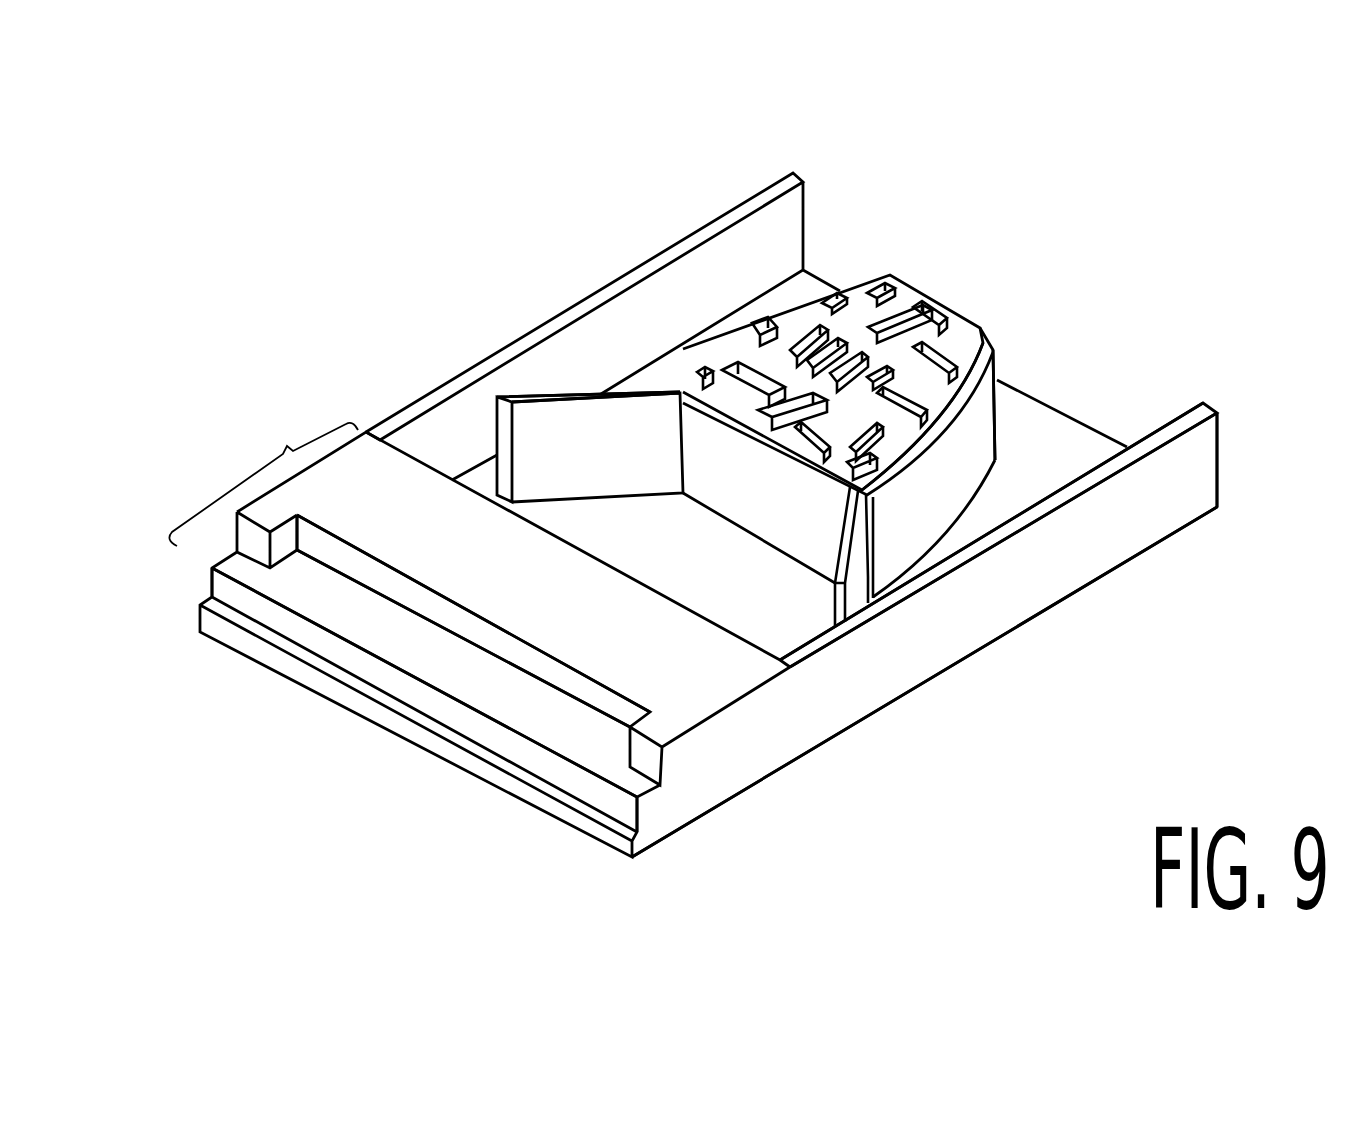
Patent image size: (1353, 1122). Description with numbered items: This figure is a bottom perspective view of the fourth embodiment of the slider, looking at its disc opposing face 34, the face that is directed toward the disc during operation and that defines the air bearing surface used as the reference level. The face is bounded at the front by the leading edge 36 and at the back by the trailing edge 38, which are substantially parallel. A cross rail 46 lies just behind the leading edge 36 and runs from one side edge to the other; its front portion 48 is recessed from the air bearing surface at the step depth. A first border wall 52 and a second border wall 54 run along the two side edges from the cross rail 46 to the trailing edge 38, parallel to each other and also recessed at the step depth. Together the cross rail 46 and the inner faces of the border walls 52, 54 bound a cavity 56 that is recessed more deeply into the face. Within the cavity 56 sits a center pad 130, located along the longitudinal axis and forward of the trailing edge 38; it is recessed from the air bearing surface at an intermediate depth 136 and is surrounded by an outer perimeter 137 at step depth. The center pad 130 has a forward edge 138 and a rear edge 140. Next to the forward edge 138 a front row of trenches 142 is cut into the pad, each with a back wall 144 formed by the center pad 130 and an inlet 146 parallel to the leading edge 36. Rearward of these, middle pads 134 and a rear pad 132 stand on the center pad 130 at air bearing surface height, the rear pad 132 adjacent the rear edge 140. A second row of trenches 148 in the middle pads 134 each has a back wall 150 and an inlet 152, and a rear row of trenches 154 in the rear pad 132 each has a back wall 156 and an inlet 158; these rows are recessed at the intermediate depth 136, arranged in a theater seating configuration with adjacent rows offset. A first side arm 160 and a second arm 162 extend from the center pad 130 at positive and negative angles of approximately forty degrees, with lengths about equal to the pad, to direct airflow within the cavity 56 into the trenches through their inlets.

The disc opposing face 34 is at (713, 675).
The leading edge 36 is at (412, 686).
The trailing edge 38 is at (1035, 388).
The cross rail 46 is at (263, 483).
The front portion 48 is at (340, 607).
The first border wall 52 is at (450, 387).
The second border wall 54 is at (992, 539).
The cavity 56 is at (797, 630).
The center pad 130 is at (996, 465).
The rear pad 132 is at (913, 298).
The middle pads 134 is at (826, 377).
The intermediate depth 136 is at (752, 335).
The outer perimeter 137 is at (965, 437).
The forward edge 138 is at (772, 405).
The rear edge 140 is at (993, 350).
The trenches 142 is at (705, 390).
The back wall 144 is at (735, 378).
The inlet 146 is at (623, 385).
The trenches 148 is at (806, 355).
The back wall 150 is at (755, 321).
The inlet 152 is at (790, 348).
The trenches 154 is at (860, 350).
The back wall 156 is at (888, 300).
The inlet 158 is at (848, 300).
The first side arm 160 is at (573, 393).
The second arm 162 is at (850, 545).